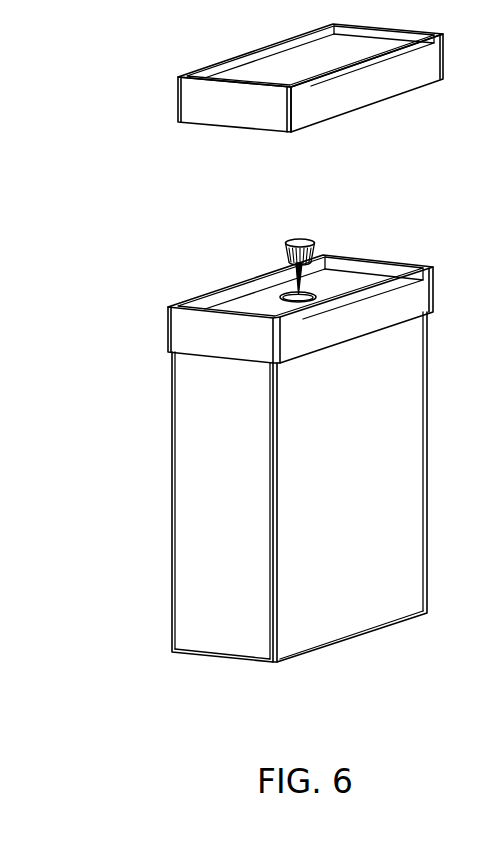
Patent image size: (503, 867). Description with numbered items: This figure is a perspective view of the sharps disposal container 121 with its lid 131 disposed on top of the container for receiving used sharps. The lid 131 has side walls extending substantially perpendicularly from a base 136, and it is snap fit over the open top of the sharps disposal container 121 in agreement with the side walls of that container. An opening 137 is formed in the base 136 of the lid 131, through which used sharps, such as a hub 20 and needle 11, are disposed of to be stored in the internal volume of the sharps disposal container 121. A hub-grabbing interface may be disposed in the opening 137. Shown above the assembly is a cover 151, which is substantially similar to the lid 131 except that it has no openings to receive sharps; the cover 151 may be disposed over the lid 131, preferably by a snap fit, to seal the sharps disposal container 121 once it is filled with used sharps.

The cover 151 is at (165, 100).
The lid 131 is at (153, 326).
The base 136 is at (247, 300).
The opening 137 is at (285, 303).
The hub 20 is at (314, 240).
The needle 11 is at (297, 287).
The sharps disposal container 121 is at (158, 515).